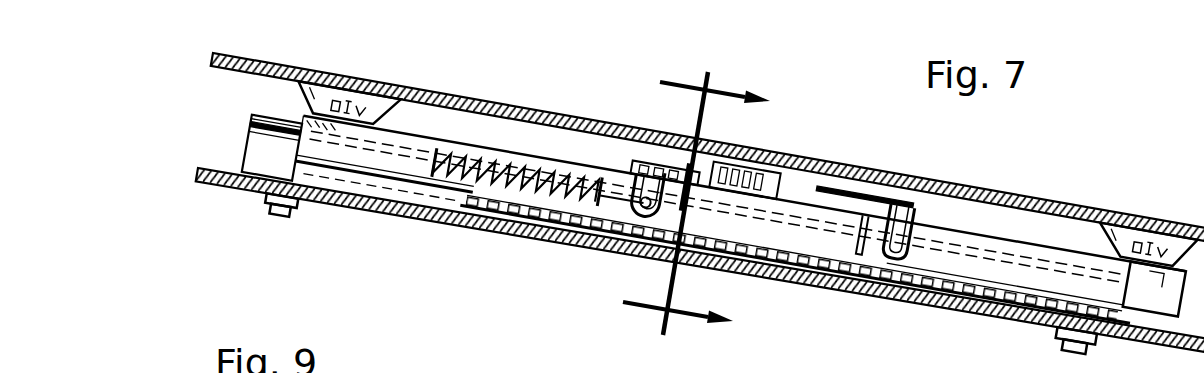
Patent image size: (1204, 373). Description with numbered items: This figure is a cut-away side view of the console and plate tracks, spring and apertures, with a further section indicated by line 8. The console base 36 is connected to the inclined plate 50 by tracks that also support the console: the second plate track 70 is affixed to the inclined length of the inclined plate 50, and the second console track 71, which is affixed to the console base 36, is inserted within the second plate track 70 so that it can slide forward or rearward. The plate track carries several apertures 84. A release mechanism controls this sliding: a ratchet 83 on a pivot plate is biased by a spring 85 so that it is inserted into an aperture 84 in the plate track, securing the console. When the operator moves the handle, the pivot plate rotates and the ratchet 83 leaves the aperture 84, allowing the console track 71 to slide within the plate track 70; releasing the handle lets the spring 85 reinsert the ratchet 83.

The section line 8- 8 is at (696, 198).
The console base 36 is at (443, 93).
The inclined plate 50 is at (408, 219).
The second plate track 70 is at (247, 156).
The second console track 71 is at (304, 115).
The ratchet 83 is at (707, 247).
The apertures 84 is at (613, 233).
The spring 85 is at (513, 157).